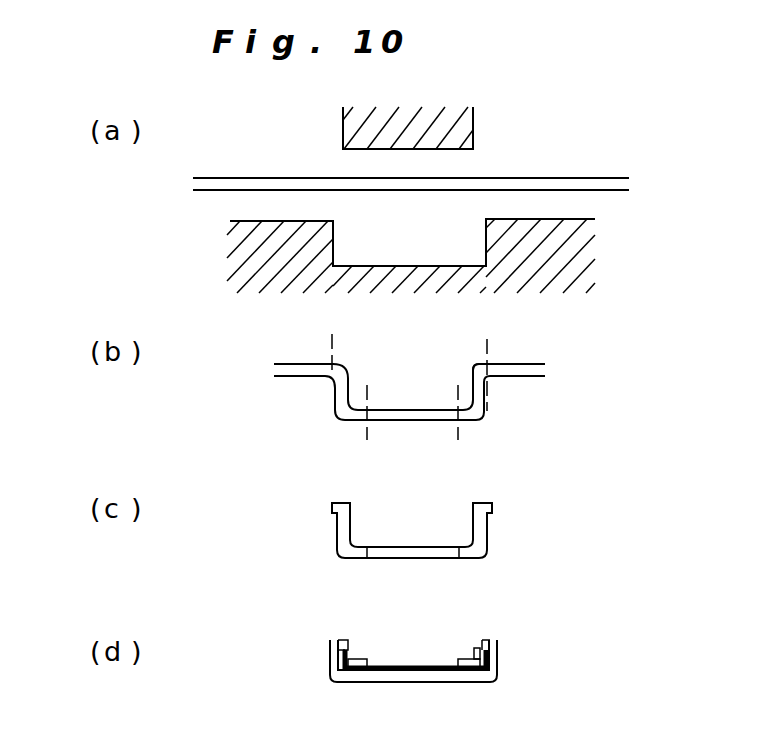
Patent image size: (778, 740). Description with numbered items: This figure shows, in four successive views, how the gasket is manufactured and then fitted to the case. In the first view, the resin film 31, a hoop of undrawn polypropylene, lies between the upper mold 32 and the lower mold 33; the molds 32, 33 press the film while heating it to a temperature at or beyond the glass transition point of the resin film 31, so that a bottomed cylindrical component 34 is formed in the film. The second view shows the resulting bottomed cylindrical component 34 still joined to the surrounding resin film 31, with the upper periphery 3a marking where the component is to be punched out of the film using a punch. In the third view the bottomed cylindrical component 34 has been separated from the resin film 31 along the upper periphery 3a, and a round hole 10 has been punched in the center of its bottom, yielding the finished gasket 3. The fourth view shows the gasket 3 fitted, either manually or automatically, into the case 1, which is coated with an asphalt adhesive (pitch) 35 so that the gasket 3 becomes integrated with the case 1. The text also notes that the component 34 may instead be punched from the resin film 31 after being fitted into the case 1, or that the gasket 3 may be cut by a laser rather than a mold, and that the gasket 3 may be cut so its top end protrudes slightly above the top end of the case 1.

The upper mold 32 is at (475, 124).
The lower mold 33 is at (565, 218).
The resin film 31 is at (215, 187).
The bottomed cylindrical component 34 is at (484, 418).
The upper periphery 3a is at (478, 372).
The gasket 3 is at (488, 530).
The round hole 10 is at (460, 558).
The case 1 is at (499, 668).
The asphalt adhesive (pitch) 35 is at (330, 656).